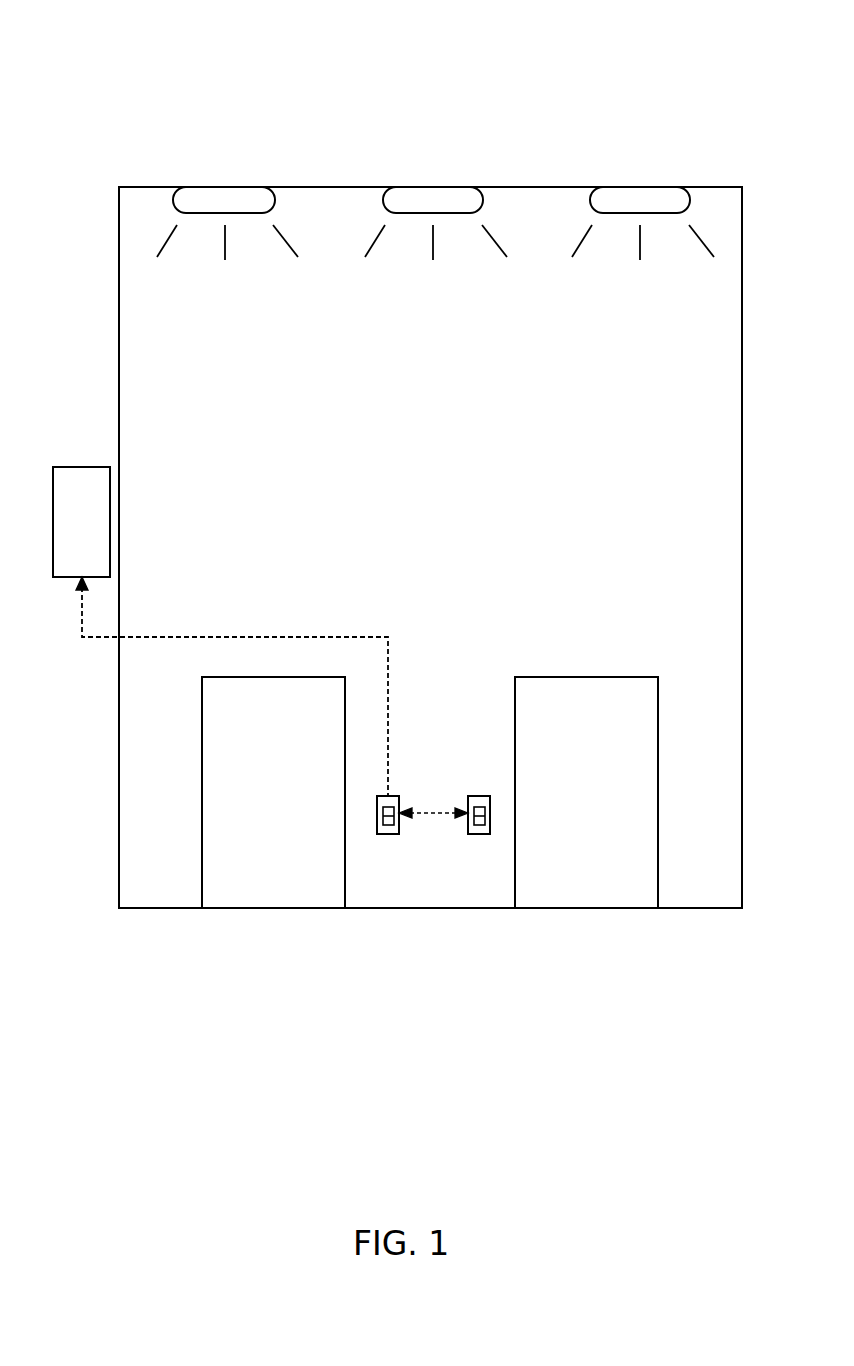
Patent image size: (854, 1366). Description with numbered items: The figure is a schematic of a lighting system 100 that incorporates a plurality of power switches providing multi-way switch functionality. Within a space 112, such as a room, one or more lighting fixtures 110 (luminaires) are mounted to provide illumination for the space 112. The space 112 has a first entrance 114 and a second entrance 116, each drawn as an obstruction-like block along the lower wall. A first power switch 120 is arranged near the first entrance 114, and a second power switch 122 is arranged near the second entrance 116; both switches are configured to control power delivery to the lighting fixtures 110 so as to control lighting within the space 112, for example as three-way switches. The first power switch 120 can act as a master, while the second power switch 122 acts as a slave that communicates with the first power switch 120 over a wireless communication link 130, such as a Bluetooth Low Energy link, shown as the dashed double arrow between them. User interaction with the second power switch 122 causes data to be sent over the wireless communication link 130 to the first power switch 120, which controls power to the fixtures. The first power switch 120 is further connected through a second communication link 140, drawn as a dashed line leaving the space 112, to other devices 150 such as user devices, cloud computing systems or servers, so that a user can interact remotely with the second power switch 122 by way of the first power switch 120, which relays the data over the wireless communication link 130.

The lighting system 100 is at (543, 86).
The lighting fixtures 110 is at (241, 186).
The space 112 is at (618, 451).
The first entrance 114 is at (295, 873).
The second entrance 116 is at (592, 877).
The first power switch 120 is at (400, 802).
The second power switch 122 is at (485, 795).
The wireless communication link 130 is at (434, 817).
The second communication link 140 is at (267, 636).
The other devices 150 is at (61, 533).